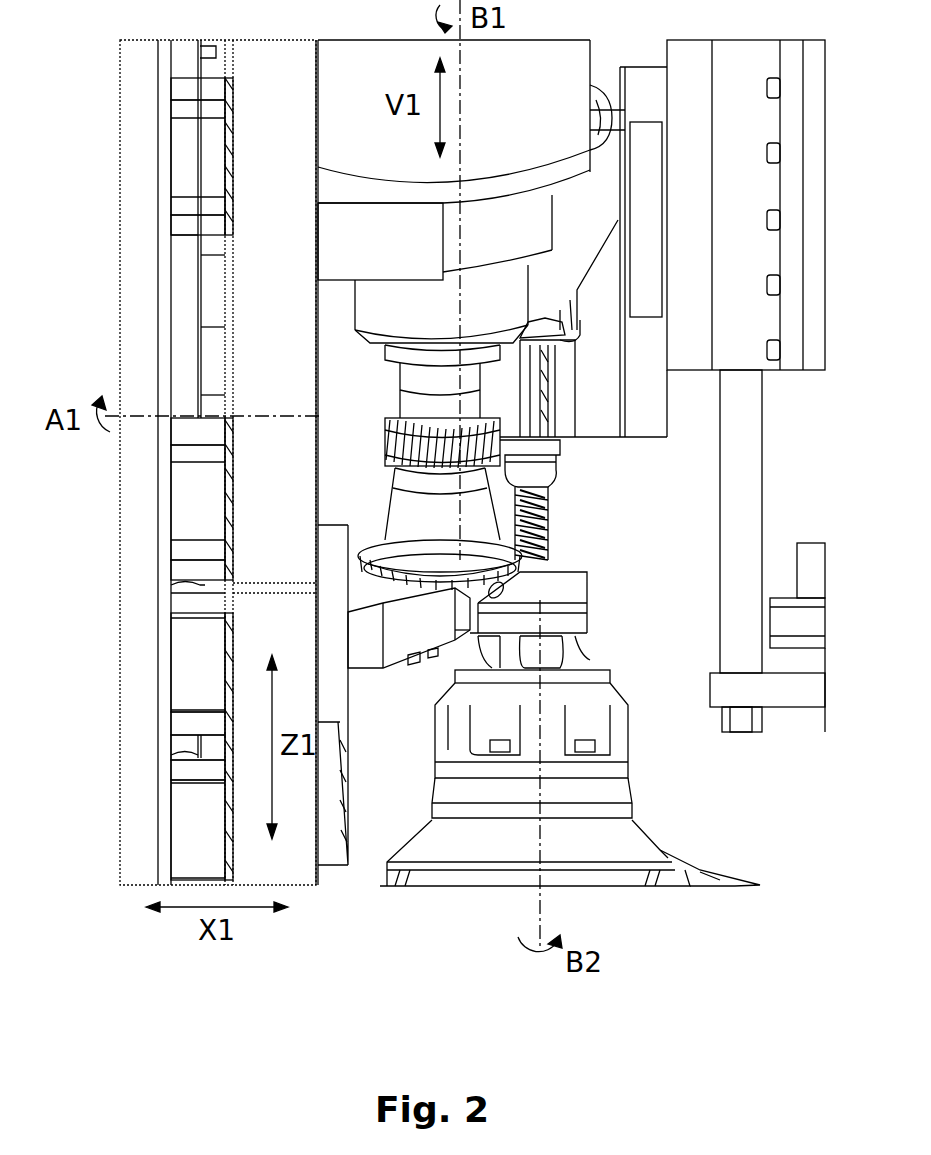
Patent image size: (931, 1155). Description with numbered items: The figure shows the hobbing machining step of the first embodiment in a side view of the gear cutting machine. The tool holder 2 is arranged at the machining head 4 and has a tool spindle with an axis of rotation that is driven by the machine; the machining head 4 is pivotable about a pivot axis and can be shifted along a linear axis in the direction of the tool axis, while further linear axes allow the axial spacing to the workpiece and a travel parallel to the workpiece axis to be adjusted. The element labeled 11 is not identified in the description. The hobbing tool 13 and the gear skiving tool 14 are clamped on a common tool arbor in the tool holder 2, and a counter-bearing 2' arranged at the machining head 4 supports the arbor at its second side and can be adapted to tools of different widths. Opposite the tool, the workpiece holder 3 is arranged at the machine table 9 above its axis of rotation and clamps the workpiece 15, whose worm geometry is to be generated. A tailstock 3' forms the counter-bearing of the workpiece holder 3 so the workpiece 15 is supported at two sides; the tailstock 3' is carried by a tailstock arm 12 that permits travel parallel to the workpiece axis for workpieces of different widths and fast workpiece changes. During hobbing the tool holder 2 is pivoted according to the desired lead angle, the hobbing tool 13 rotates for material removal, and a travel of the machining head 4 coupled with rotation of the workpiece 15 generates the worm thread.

The machining head 4 is at (267, 273).
The spindle housing 11 is at (471, 462).
The tool holder 2 is at (441, 341).
The gear skiving tool 14 is at (398, 418).
The hobbing tool 13 is at (385, 548).
The counter-bearing of the tool holder 2' is at (394, 695).
The tailstock 3' is at (583, 411).
The workpiece 15 is at (540, 515).
The workpiece holder 3 is at (540, 695).
The machine table 9 is at (448, 852).
The tailstock arm 12 is at (643, 392).